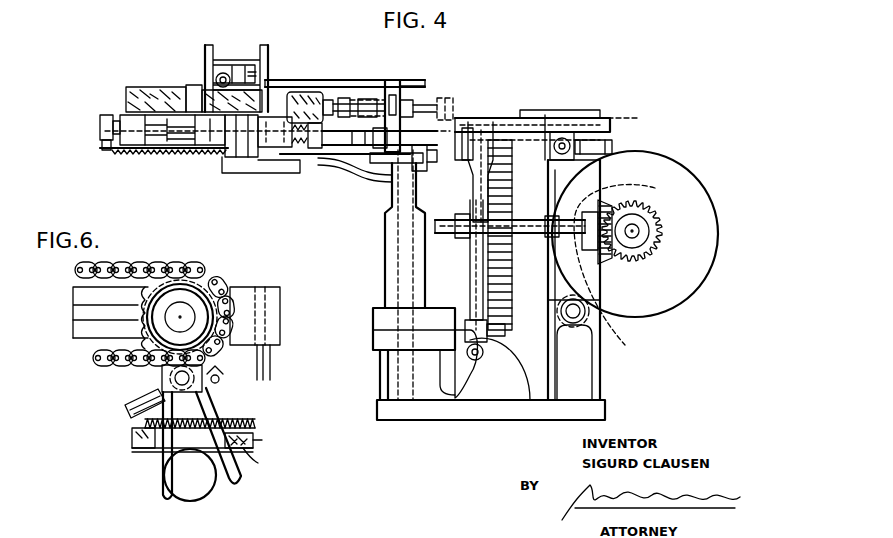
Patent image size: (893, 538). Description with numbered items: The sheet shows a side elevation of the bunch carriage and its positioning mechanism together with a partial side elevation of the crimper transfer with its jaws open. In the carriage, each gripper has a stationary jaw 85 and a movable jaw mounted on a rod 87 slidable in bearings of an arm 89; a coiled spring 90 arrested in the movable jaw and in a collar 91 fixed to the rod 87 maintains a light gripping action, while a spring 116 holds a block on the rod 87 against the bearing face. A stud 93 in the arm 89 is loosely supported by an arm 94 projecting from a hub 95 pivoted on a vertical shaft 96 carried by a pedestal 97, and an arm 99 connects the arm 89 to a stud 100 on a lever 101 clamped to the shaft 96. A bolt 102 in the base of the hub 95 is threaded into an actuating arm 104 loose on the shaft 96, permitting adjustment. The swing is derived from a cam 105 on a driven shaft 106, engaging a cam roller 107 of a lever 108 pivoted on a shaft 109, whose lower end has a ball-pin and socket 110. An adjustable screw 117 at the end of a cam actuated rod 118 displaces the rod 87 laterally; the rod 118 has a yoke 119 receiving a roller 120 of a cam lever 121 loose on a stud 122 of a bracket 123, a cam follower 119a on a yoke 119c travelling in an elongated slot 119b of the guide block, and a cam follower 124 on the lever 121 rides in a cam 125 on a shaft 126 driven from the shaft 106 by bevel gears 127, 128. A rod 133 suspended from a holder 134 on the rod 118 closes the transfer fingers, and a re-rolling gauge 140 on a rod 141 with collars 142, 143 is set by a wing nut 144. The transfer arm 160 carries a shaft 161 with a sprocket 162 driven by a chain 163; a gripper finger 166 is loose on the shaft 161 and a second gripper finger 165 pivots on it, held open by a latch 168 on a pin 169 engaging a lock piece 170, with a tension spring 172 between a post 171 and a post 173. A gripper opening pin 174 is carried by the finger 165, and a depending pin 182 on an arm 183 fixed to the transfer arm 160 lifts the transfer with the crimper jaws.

In FIG. 4, the rod 87 is at (100, 2).
In FIG. 4, the stationary jaw 85 is at (192, 78).
In FIG. 4, the arm 89 is at (148, 148).
In FIG. 4, the coiled spring 90 is at (274, 168).
In FIG. 4, the collar 91 is at (313, 150).
In FIG. 4, the stud 93 is at (234, 157).
In FIG. 4, the arm 94 is at (262, 160).
In FIG. 4, the hub 95 is at (388, 258).
In FIG. 4, the vertical shaft 96 is at (400, 270).
In FIG. 4, the pedestal 97 is at (383, 390).
In FIG. 4, the arm 99 is at (340, 158).
In FIG. 4, the stud 100 is at (422, 178).
In FIG. 4, the lever 101 is at (395, 178).
In FIG. 4, the bolt 102 is at (466, 318).
In FIG. 4, the actuating arm 104 is at (380, 330).
In FIG. 4, the cam 105 is at (540, 420).
In FIG. 4, the driven shaft 106 is at (448, 235).
In FIG. 4, the cam roller 107 is at (532, 236).
In FIG. 4, the lever 108 is at (467, 356).
In FIG. 4, the shaft 109 is at (480, 120).
In FIG. 4, the ball-pin and socket 110 is at (478, 400).
In FIG. 4, the spring 116 is at (168, 156).
In FIG. 4, the adjustable screw 117 is at (356, 98).
In FIG. 4, the cam actuated rod 118 is at (612, 145).
In FIG. 4, the yoke 119 is at (576, 132).
In FIG. 4, the cam follower 119a is at (565, 106).
In FIG. 4, the elongated slot 119b is at (600, 122).
In FIG. 4, the yoke 119c is at (502, 116).
In FIG. 4, the roller 120 is at (570, 152).
In FIG. 4, the cam lever 121 is at (585, 320).
In FIG. 4, the stud 122 is at (604, 365).
In FIG. 4, the bracket 123 is at (596, 385).
In FIG. 4, the cam follower 124 is at (605, 200).
In FIG. 4, the cam 125 is at (700, 190).
In FIG. 4, the shaft 126 is at (650, 240).
In FIG. 4, the bevel gear 127 is at (608, 258).
In FIG. 4, the bevel gear 128 is at (662, 232).
In FIG. 4, the rod 133 is at (292, 80).
In FIG. 6, the rod 133 is at (255, 447).
In FIG. 4, the holder 134 is at (400, 80).
In FIG. 4, the re-rolling gauge 140 is at (330, 95).
In FIG. 4, the rod 141 is at (378, 97).
In FIG. 4, the collar 142 is at (346, 96).
In FIG. 4, the collar 143 is at (420, 100).
In FIG. 4, the wing nut 144 is at (410, 80).
In FIG. 6, the transfer arm 160 is at (73, 328).
In FIG. 6, the shaft 161 is at (185, 315).
In FIG. 6, the sprocket 162 is at (73, 299).
In FIG. 6, the chain 163 is at (157, 264).
In FIG. 6, the gripper finger 165 is at (243, 484).
In FIG. 4, the gripper finger 166 is at (210, 50).
In FIG. 6, the gripper finger 166 is at (160, 488).
In FIG. 4, the latch 168 is at (246, 68).
In FIG. 6, the latch 168 is at (258, 463).
In FIG. 6, the pin 169 is at (135, 450).
In FIG. 6, the lock piece 170 is at (253, 437).
In FIG. 6, the post 171 is at (132, 433).
In FIG. 4, the tension spring 172 is at (226, 66).
In FIG. 6, the tension spring 172 is at (224, 418).
In FIG. 6, the post 173 is at (252, 420).
In FIG. 6, the gripper opening pin 174 is at (135, 403).
In FIG. 6, the depending pin 182 is at (272, 368).
In FIG. 6, the arm 183 is at (282, 318).